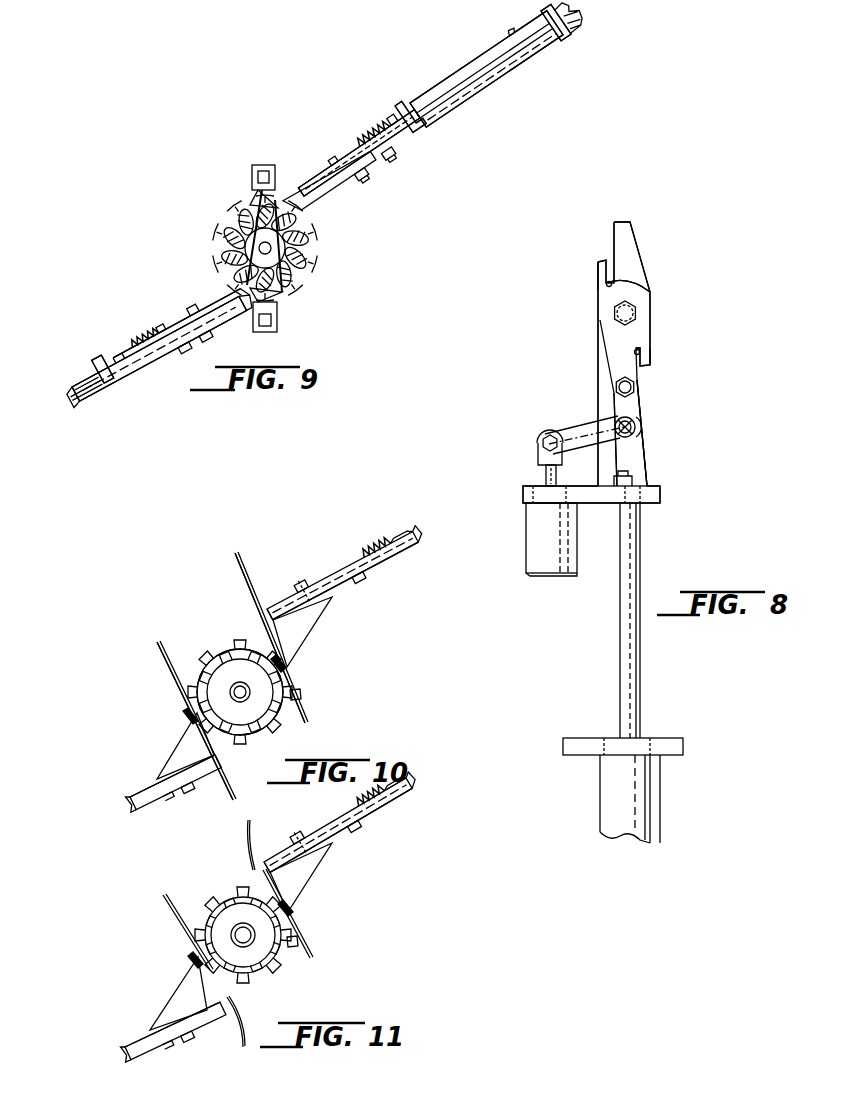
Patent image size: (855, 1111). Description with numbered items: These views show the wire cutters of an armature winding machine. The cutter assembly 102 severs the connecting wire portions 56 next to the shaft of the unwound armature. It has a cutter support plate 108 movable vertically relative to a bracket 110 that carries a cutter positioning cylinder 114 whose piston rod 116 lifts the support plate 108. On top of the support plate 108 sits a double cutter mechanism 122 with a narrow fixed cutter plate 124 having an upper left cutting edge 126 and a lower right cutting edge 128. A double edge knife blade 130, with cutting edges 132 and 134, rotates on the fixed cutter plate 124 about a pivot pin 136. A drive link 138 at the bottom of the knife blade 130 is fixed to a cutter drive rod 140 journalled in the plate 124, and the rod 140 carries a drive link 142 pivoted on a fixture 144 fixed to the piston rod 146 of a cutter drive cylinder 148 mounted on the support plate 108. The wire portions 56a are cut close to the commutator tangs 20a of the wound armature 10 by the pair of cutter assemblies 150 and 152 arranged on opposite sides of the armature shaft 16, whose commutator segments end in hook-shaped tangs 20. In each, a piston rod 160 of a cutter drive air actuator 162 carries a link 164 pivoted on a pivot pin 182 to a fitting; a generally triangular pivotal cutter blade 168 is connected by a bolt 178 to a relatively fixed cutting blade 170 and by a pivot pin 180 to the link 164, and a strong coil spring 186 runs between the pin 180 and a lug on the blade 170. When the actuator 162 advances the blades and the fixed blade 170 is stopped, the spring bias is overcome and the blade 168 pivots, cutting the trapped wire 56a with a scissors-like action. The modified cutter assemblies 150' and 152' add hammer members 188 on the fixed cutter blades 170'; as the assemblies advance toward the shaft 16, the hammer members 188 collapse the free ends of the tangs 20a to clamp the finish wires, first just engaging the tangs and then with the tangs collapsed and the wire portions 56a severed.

In FIG. 9, the cutter assembly 150 is at (431, 106).
In FIG. 9, the cutter assembly 152 is at (158, 341).
In FIG. 9, the piston rod 160 is at (462, 104).
In FIG. 9, the cutter drive air actuator 162 is at (584, 48).
In FIG. 9, the link 164 is at (386, 150).
In FIG. 9, the pivotal cutter blade 168 is at (321, 164).
In FIG. 9, the fixed cutting blade 170 is at (242, 256).
In FIG. 11, the fixed cutting blade 170 is at (338, 825).
In FIG. 9, the bolt 178 is at (292, 176).
In FIG. 9, the pivot pin 180 is at (360, 170).
In FIG. 9, the pivot pin 182 is at (402, 112).
In FIG. 9, the coil spring 186 is at (378, 134).
In FIG. 8, the double cutter mechanism 122 is at (646, 259).
In FIG. 8, the cutting edge 126 is at (612, 246).
In FIG. 8, the cutting edge 132 is at (600, 268).
In FIG. 8, the connecting wire portions 56 is at (607, 287).
In FIG. 8, the pivot pin 136 is at (633, 307).
In FIG. 8, the double edge knife blade 130 is at (650, 328).
In FIG. 8, the cutting edge 134 is at (652, 363).
In FIG. 8, the cutter assembly 102 is at (552, 382).
In FIG. 8, the fixed cutter plate 124 is at (598, 345).
In FIG. 8, the cutting edge 128 is at (637, 375).
In FIG. 8, the drive link 142 is at (585, 428).
In FIG. 8, the drive link 138 is at (640, 397).
In FIG. 8, the cutter drive rod 140 is at (640, 427).
In FIG. 8, the fixture 144 is at (540, 448).
In FIG. 8, the piston rod 146 is at (544, 474).
In FIG. 8, the cutter support plate 108 is at (660, 494).
In FIG. 8, the cutter drive cylinder 148 is at (527, 545).
In FIG. 8, the piston rod 116 is at (641, 665).
In FIG. 8, the bracket 110 is at (672, 742).
In FIG. 8, the cutter positioning cylinder 114 is at (655, 787).
In FIG. 10, the modified cutter assembly 150' is at (344, 570).
In FIG. 11, the modified cutter assembly 150' is at (340, 822).
In FIG. 10, the wire portions 56a is at (251, 580).
In FIG. 11, the wire portions 56a is at (230, 800).
In FIG. 10, the armature 10 is at (210, 626).
In FIG. 10, the fixed cutter blade 170' is at (253, 664).
In FIG. 11, the fixed cutter blade 170' is at (160, 1040).
In FIG. 10, the hammer members 188 is at (306, 630).
In FIG. 11, the hammer members 188 is at (306, 876).
In FIG. 10, the armature shaft 16 is at (240, 692).
In FIG. 11, the armature shaft 16 is at (243, 935).
In FIG. 10, the tangs 20a is at (284, 668).
In FIG. 11, the tangs 20a is at (292, 903).
In FIG. 10, the hook-shaped tangs 20 is at (300, 694).
In FIG. 11, the hook-shaped tangs 20 is at (298, 940).
In FIG. 10, the modified cutter assembly 152' is at (172, 777).
In FIG. 11, the modified cutter assembly 152' is at (168, 1034).